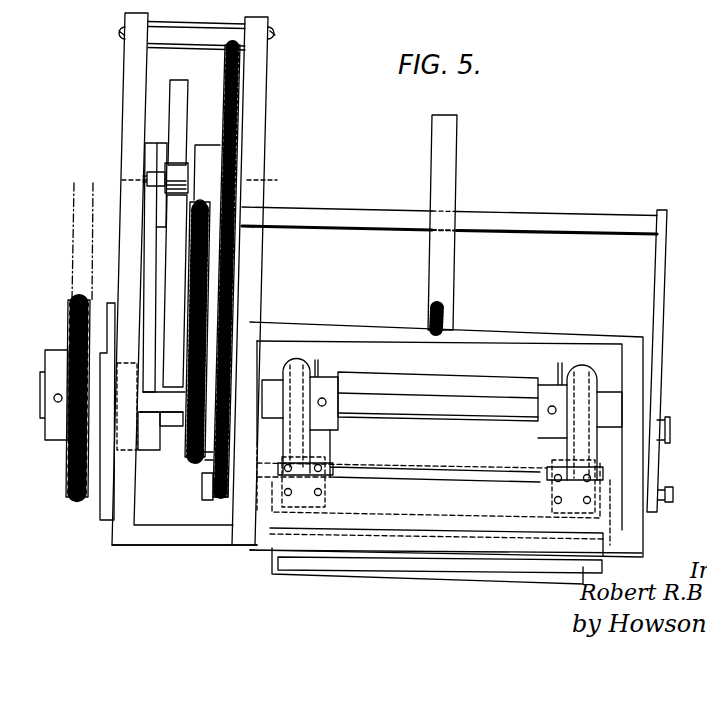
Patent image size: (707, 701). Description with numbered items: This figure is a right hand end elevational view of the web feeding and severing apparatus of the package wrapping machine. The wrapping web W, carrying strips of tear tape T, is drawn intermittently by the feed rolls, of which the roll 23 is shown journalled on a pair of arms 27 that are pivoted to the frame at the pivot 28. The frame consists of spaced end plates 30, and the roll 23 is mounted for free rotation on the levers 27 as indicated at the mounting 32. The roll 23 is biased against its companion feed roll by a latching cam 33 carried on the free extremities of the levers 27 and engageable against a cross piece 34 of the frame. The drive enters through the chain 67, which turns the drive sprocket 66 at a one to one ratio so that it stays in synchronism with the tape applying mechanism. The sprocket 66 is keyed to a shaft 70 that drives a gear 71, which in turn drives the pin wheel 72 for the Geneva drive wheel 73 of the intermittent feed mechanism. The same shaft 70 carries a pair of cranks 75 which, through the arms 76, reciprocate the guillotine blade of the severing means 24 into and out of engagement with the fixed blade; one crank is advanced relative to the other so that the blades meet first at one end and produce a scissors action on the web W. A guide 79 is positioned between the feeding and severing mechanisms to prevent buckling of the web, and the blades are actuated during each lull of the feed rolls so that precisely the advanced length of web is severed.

The feed roller 23 is at (432, 380).
The severing means 24 is at (395, 485).
The arm 27 is at (215, 197).
The pivot 28 is at (224, 488).
The end plate 30 is at (248, 535).
The roll mounting 32 is at (190, 455).
The latching cam 33 is at (440, 157).
The cross piece 34 is at (522, 337).
The drive sprocket 66 is at (70, 325).
The chain 67 is at (74, 222).
The shaft 70 is at (378, 403).
The gear 71 is at (205, 486).
The pin wheel 72 is at (165, 171).
The Geneva drive wheel 73 is at (188, 95).
The crank 75 is at (328, 377).
The arm 76 is at (293, 437).
The guide 79 is at (378, 462).
The tear tape T is at (345, 566).
The web W is at (410, 575).